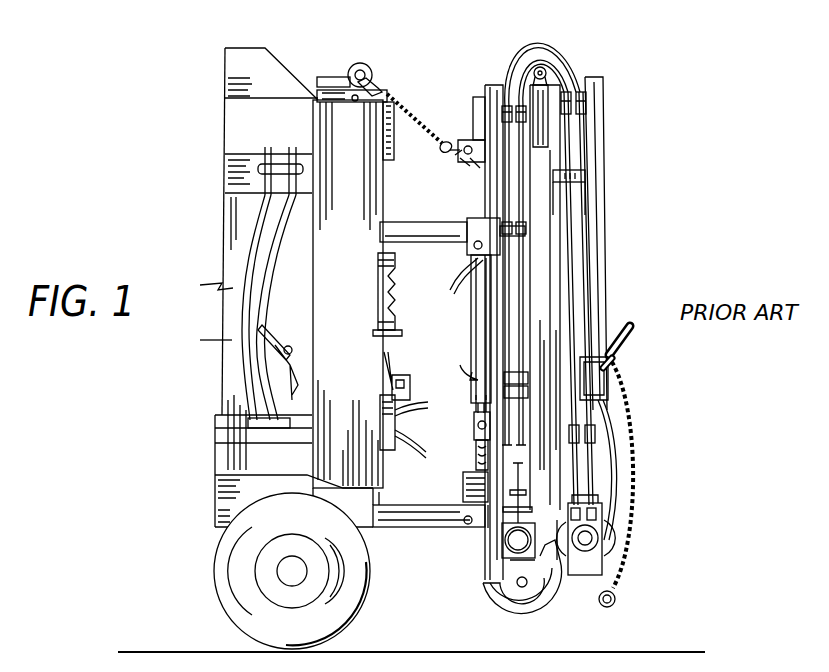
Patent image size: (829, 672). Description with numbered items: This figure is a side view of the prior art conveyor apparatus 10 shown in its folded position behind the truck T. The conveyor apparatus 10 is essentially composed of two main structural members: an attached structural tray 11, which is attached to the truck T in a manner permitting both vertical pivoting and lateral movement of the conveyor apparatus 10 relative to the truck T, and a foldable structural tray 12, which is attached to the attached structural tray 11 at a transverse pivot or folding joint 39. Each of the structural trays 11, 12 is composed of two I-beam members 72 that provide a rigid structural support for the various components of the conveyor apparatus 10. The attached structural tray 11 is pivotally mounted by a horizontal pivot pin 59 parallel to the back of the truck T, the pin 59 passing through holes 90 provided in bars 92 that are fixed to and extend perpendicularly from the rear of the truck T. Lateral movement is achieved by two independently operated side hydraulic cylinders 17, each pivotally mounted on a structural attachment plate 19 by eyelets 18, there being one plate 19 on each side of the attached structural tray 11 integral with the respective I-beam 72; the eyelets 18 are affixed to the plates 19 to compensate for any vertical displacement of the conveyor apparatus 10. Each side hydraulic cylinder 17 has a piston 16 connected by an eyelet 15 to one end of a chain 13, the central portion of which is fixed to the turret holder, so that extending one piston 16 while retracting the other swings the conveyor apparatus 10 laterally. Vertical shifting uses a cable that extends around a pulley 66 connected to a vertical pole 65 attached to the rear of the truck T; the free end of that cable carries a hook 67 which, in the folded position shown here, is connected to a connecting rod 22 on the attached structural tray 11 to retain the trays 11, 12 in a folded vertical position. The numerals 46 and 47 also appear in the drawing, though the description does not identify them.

The conveyor apparatus 10 is at (618, 188).
The attached structural tray 11 is at (530, 290).
The foldable structural tray 12 is at (560, 228).
The chain 13 is at (477, 445).
The eyelet 15 is at (478, 415).
The piston 16 is at (478, 381).
The side hydraulic cylinder 17 is at (480, 302).
The eyelet 18 is at (465, 242).
The structural attachment plate 19 is at (477, 227).
The connecting rod 22 is at (460, 130).
The transverse pivot or folding joint 39 is at (555, 50).
The cable 46 is at (472, 364).
The hose 47 is at (462, 268).
The horizontal pivot pin 59 is at (476, 523).
The vertical pole 65 is at (317, 84).
The pulley 66 is at (382, 86).
The hook 67 is at (447, 136).
The I-beam member 72 is at (525, 173).
The hole 90 is at (470, 504).
The bar 92 is at (397, 516).
The truck T is at (232, 342).